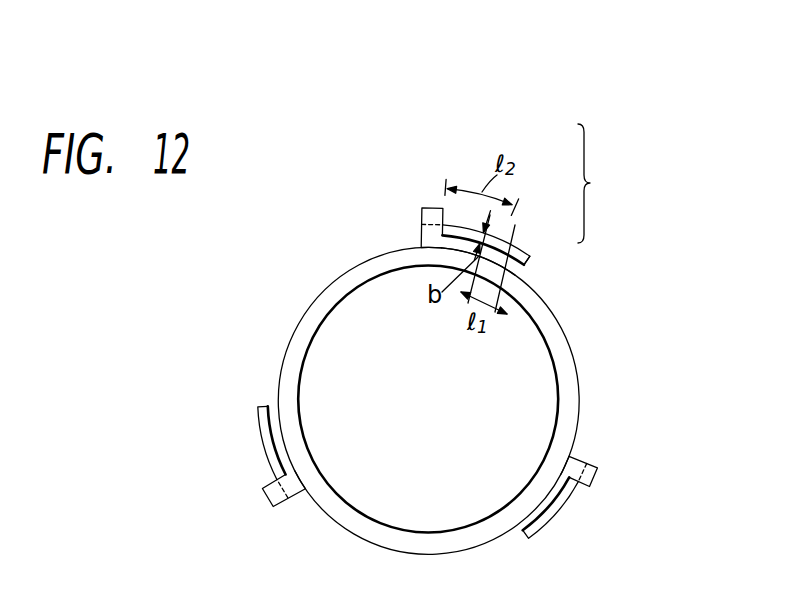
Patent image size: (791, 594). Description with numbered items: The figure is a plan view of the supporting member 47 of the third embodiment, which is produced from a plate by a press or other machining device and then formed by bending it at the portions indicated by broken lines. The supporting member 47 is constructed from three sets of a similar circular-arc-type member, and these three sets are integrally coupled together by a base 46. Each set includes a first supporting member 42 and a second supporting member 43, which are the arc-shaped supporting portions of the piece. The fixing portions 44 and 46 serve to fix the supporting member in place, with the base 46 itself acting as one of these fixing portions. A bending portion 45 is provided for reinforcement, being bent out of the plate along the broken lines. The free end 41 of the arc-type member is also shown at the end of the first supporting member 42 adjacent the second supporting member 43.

The free end of spring tongue 41 is at (527, 253).
The first supporting member 42 is at (513, 243).
The second supporting member 43 is at (458, 224).
The fixing portion 44 is at (420, 246).
The bending portion for reinforcement 45 is at (429, 211).
The base 46 is at (295, 345).
The supporting member 47 is at (507, 198).